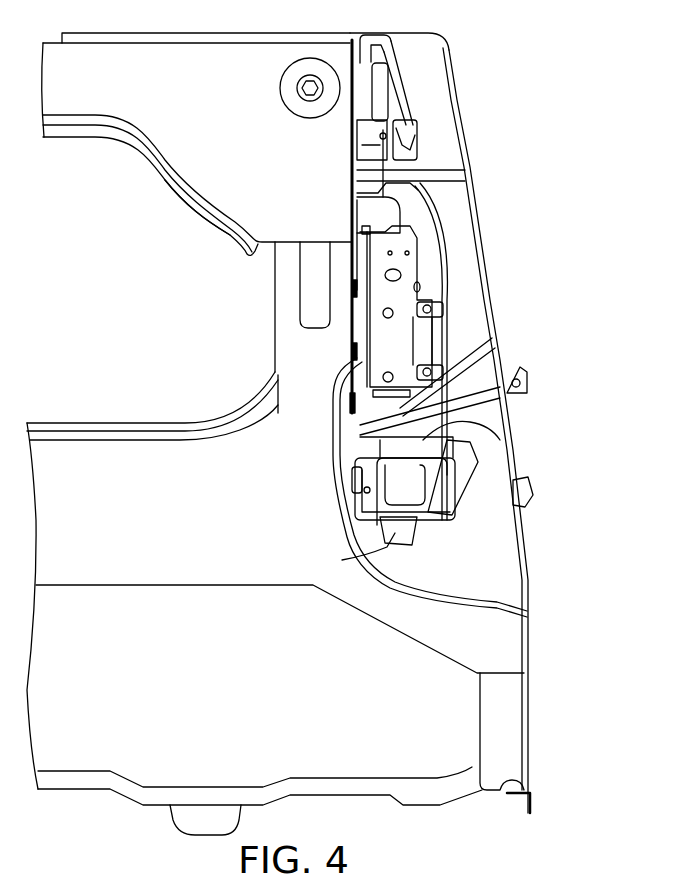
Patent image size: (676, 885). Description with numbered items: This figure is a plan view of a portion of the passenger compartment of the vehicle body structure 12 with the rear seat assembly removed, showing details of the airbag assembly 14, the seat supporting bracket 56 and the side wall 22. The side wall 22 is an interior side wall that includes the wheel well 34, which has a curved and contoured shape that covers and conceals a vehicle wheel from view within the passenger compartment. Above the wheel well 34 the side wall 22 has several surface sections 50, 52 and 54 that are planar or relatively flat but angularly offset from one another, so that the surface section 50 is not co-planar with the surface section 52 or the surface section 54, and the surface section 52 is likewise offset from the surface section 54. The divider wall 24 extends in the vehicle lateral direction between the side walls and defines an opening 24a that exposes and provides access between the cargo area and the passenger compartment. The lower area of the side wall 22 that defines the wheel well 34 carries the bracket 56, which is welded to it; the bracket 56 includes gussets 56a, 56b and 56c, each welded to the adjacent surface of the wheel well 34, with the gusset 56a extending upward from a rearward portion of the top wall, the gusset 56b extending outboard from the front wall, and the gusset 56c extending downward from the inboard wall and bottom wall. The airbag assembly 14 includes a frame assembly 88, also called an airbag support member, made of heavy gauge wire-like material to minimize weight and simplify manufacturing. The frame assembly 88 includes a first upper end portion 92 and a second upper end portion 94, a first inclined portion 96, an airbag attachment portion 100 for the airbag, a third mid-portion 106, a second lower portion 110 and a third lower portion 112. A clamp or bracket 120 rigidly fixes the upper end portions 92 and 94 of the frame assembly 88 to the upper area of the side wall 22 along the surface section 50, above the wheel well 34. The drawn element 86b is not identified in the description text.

The vehicle body structure 12 is at (592, 170).
The airbag assembly 14 is at (443, 272).
The side wall 22 is at (453, 148).
The divider wall 24 is at (192, 150).
The opening 24a is at (213, 217).
The wheel well 34 is at (482, 365).
The surface section 50 is at (410, 53).
The surface section 52 is at (407, 217).
The surface section 54 is at (353, 332).
The bracket 56 is at (478, 460).
The gusset 56a is at (463, 422).
The gusset 56b is at (460, 493).
The gusset 56c is at (420, 528).
The fastener 86b is at (352, 478).
The frame assembly 88 is at (414, 87).
The first upper end portion 92 is at (377, 33).
The second upper end portion 94 is at (350, 105).
The first inclined portion 96 is at (350, 263).
The airbag attachment portion 100 is at (390, 353).
The third mid-portion 106 is at (470, 410).
The second lower portion 110 is at (352, 505).
The third lower portion 112 is at (387, 542).
The clamp or bracket 120 is at (418, 107).